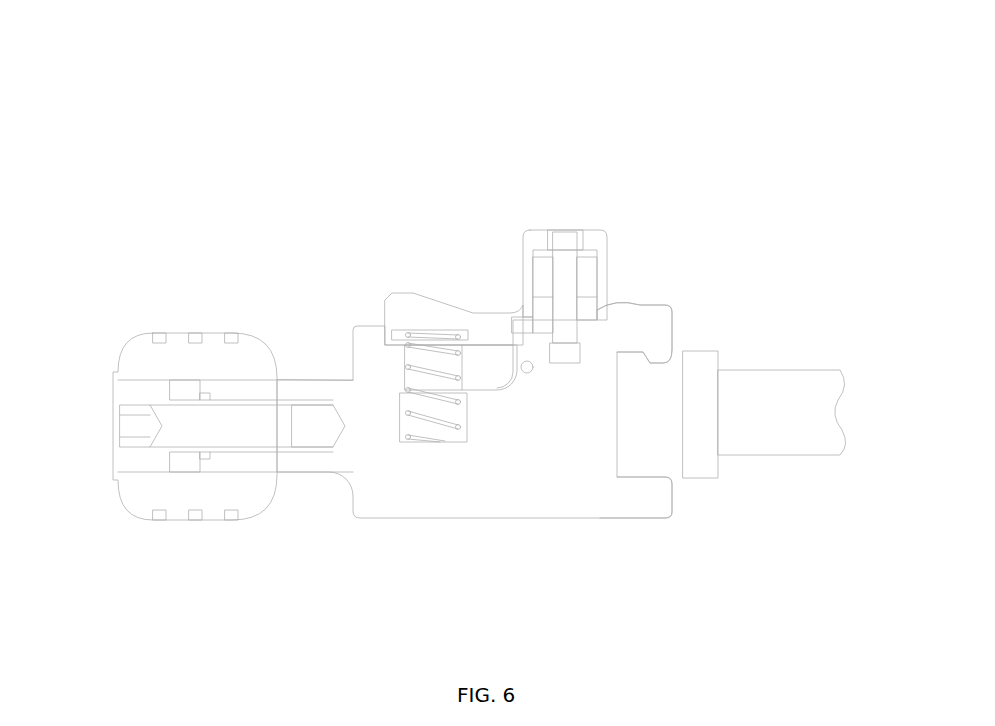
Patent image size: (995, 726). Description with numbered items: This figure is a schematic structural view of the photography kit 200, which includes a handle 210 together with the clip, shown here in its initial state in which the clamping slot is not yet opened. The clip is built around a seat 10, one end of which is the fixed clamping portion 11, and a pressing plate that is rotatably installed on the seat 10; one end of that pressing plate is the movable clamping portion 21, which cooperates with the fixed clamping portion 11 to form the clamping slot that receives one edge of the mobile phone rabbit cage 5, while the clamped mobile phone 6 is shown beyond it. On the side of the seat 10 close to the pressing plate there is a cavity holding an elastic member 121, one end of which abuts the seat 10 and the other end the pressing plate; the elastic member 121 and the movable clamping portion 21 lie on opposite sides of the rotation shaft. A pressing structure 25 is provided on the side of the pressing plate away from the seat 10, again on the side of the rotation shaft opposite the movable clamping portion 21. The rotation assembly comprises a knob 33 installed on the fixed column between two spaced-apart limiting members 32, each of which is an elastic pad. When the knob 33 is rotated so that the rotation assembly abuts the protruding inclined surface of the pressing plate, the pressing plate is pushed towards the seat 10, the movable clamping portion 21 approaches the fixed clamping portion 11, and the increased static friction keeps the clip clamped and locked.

The photography kit 200 is at (517, 54).
The seat 10 is at (470, 485).
The fixed clamping portion 11 is at (652, 497).
The movable clamping portion 21 is at (640, 320).
The pressing structure 25 is at (405, 302).
The limiting member 32 is at (547, 257).
The knob 33 is at (595, 247).
The elastic member 121 is at (433, 395).
The handle 210 is at (180, 360).
The mobile phone rabbit cage 5 is at (695, 370).
The mobile phone 6 is at (798, 407).